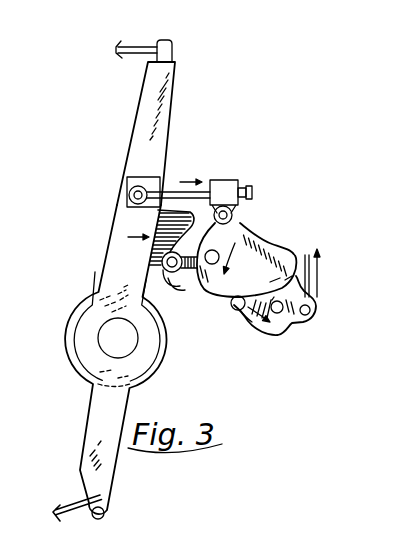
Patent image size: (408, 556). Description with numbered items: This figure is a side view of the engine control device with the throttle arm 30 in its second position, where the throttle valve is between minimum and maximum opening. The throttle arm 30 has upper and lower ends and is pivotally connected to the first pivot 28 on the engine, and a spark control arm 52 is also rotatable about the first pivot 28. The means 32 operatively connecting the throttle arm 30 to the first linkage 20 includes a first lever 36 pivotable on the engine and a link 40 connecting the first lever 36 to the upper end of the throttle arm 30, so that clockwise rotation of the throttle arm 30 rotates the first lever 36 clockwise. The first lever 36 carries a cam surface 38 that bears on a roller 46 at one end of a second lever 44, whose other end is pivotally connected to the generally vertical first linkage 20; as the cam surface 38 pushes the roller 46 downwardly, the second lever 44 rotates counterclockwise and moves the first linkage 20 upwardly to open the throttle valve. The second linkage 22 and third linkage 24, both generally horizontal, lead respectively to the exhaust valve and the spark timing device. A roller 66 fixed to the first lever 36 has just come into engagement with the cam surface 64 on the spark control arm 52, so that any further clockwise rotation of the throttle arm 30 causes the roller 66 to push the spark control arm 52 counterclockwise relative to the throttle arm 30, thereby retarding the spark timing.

The first linkage 20 is at (311, 267).
The second linkage 22 is at (80, 500).
The third linkage 24 is at (147, 46).
The first pivot 28 is at (115, 337).
The throttle arm 30 is at (97, 407).
The means operatively connecting the throttle arm to the first linkage 32 is at (268, 201).
The first lever 36 is at (266, 243).
The cam surface 38 is at (226, 302).
The link 40 is at (199, 190).
The second lever 44 is at (287, 333).
The roller 46 is at (241, 312).
The spark control arm 52 is at (148, 105).
The cam surface 64 is at (156, 284).
The roller 66 is at (179, 281).